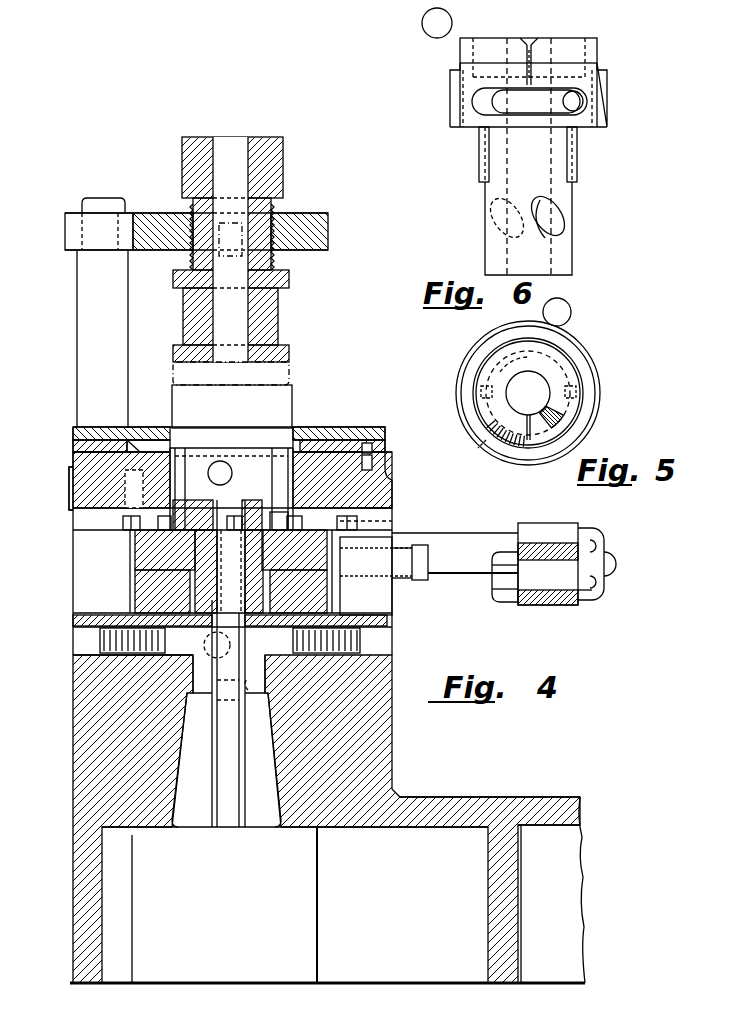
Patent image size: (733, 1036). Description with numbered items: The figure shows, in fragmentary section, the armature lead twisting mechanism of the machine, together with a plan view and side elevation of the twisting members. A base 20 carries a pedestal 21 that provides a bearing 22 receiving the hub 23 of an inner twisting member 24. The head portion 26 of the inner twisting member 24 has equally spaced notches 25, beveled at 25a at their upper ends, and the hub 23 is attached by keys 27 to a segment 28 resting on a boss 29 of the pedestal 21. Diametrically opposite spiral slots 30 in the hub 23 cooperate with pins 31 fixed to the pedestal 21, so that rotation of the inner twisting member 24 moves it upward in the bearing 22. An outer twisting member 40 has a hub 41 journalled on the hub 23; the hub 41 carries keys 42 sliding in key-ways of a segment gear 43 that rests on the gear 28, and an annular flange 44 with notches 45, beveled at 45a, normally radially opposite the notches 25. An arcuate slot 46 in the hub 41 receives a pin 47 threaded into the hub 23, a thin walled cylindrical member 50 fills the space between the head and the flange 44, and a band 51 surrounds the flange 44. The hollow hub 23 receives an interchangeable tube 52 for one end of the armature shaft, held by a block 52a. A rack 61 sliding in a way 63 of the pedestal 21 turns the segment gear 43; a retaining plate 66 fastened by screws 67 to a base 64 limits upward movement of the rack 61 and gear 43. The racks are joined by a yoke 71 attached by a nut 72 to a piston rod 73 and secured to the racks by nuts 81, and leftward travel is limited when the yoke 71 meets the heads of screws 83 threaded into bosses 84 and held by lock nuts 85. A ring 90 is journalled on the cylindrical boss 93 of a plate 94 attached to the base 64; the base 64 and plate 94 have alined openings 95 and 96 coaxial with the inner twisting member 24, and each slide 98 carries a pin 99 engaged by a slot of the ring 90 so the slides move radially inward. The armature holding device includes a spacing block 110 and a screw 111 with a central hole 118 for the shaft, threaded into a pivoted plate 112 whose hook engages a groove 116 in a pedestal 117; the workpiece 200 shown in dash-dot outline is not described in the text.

In FIG. 4, the base 20 is at (506, 797).
In FIG. 4, the pedestal 21 is at (380, 721).
In FIG. 4, the bearing 22 is at (193, 675).
In FIG. 4, the hub 23 is at (200, 697).
In FIG. 6, the hub 23 is at (485, 201).
In FIG. 4, the inner twisting member 24 is at (220, 473).
In FIG. 4, the notches 25 is at (262, 505).
In FIG. 5, the notches 25 is at (528, 393).
In FIG. 5, the beveled surface 25a is at (505, 395).
In FIG. 4, the head portion 26 is at (188, 490).
In FIG. 5, the head portion 26 is at (568, 362).
In FIG. 4, the keys 27 is at (262, 594).
In FIG. 6, the keys 27 is at (479, 159).
In FIG. 4, the segment 28 is at (135, 598).
In FIG. 4, the boss 29 is at (145, 620).
In FIG. 4, the spiral slots 30 is at (250, 711).
In FIG. 6, the spiral slots 30 is at (570, 211).
In FIG. 5, the spiral slots 30 is at (525, 362).
In FIG. 4, the pins 31 is at (120, 638).
In FIG. 6, the outer twisting member 40 is at (437, 23).
In FIG. 5, the outer twisting member 40 is at (557, 312).
In FIG. 4, the hub 41 is at (178, 500).
In FIG. 6, the hub 41 is at (590, 101).
In FIG. 4, the keys 42 is at (288, 556).
In FIG. 6, the keys 42 is at (450, 90).
In FIG. 4, the segment gear 43 is at (135, 549).
In FIG. 6, the annular flange 44 is at (471, 38).
In FIG. 5, the annular flange 44 is at (573, 346).
In FIG. 4, the notches 45 is at (276, 516).
In FIG. 6, the notches 45 is at (536, 55).
In FIG. 5, the notches 45 is at (526, 450).
In FIG. 6, the beveled surface 45a is at (529, 40).
In FIG. 5, the beveled surface 45a is at (497, 450).
In FIG. 6, the arcuate slot 46 is at (480, 103).
In FIG. 5, the arcuate slot 46 is at (481, 441).
In FIG. 6, the pin 47 is at (556, 100).
In FIG. 5, the pin 47 is at (595, 426).
In FIG. 4, the thin walled cylindrical member 50 is at (178, 450).
In FIG. 5, the thin walled cylindrical member 50 is at (585, 381).
In FIG. 4, the band 51 is at (123, 519).
In FIG. 5, the band 51 is at (601, 396).
In FIG. 4, the tube 52 is at (239, 796).
In FIG. 4, the block 52a is at (318, 887).
In FIG. 4, the rack 61 is at (470, 533).
In FIG. 4, the way 63 is at (73, 563).
In FIG. 4, the base 64 is at (69, 492).
In FIG. 4, the retaining plate 66 is at (392, 508).
In FIG. 4, the screws 67 is at (392, 522).
In FIG. 4, the yoke 71 is at (562, 530).
In FIG. 4, the nut 72 is at (496, 580).
In FIG. 4, the piston rod 73 is at (592, 593).
In FIG. 4, the nuts 81 is at (601, 549).
In FIG. 4, the screws 83 is at (428, 557).
In FIG. 4, the bosses 84 is at (380, 605).
In FIG. 4, the lock nuts 85 is at (405, 578).
In FIG. 4, the ring 90 is at (385, 433).
In FIG. 4, the cylindrical boss 93 is at (140, 427).
In FIG. 4, the plate 94 is at (95, 427).
In FIG. 4, the opening 95 is at (302, 432).
In FIG. 4, the opening 96 is at (292, 440).
In FIG. 4, the slide 98 is at (385, 462).
In FIG. 4, the pin 99 is at (372, 448).
In FIG. 4, the spacing block 110 is at (289, 279).
In FIG. 4, the screw 111 is at (283, 155).
In FIG. 4, the plate 112 is at (313, 215).
In FIG. 4, the groove 116 is at (76, 226).
In FIG. 4, the pedestal 117 is at (77, 296).
In FIG. 4, the central hole 118 is at (228, 145).
In FIG. 4, the workpiece 200 is at (290, 380).